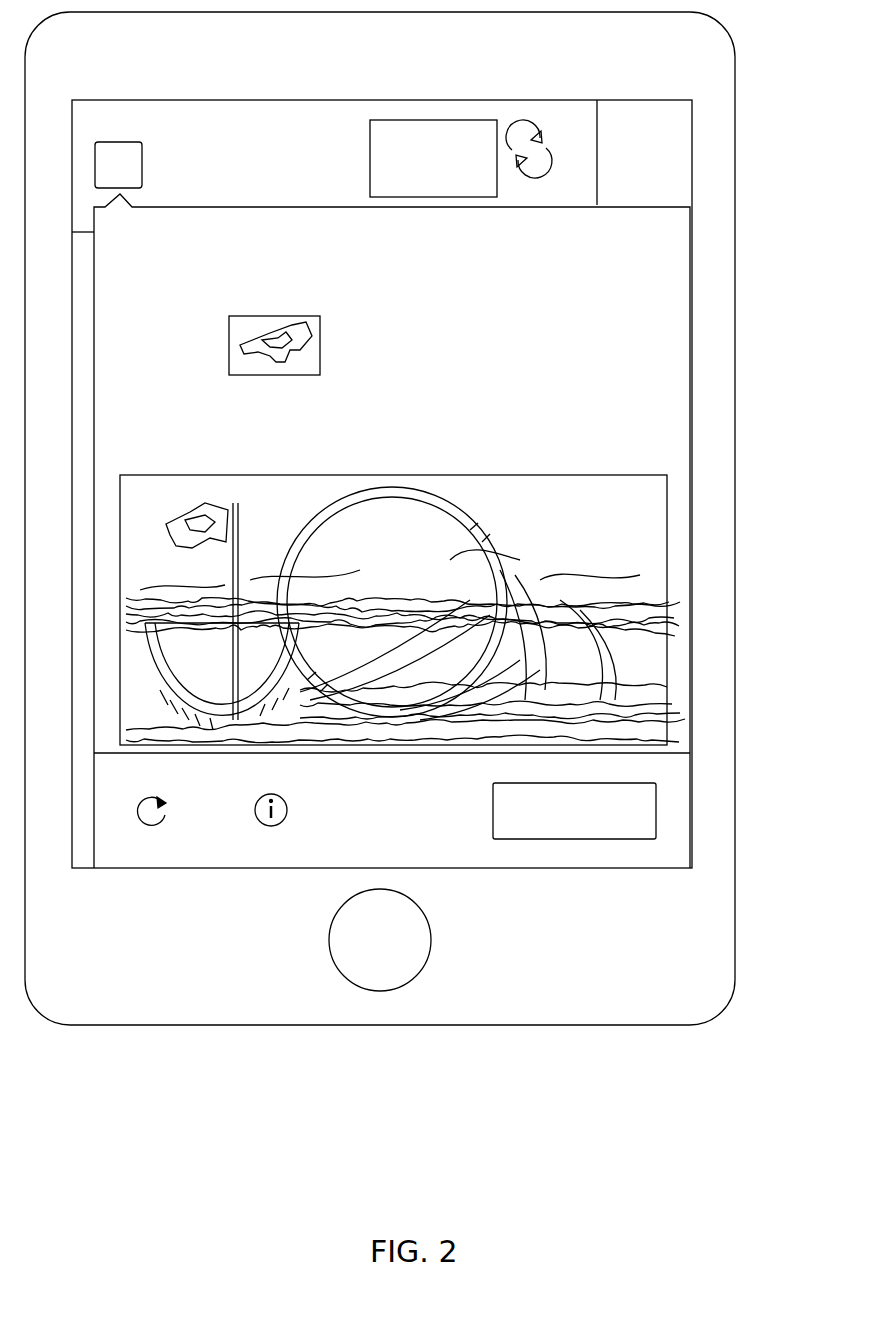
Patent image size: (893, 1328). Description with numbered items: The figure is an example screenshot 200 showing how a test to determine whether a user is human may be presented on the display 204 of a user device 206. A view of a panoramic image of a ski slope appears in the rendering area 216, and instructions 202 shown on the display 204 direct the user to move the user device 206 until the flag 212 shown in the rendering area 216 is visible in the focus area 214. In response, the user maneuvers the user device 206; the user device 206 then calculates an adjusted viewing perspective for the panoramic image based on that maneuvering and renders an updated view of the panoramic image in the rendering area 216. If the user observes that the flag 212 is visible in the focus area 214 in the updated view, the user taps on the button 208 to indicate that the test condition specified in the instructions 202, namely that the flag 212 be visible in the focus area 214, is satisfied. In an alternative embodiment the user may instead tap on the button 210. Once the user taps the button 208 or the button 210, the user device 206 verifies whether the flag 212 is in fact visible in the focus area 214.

The screenshot 200 is at (258, 76).
The instructions 202 is at (616, 295).
The display 204 is at (632, 100).
The user device 206 is at (735, 982).
The button 208 is at (493, 808).
The button 210 is at (431, 945).
The flag 212 is at (205, 506).
The focus area 214 is at (426, 490).
The rendering area 216 is at (562, 475).